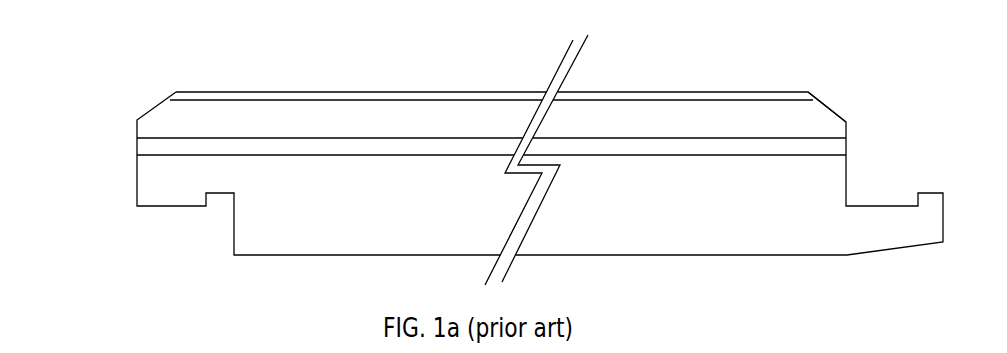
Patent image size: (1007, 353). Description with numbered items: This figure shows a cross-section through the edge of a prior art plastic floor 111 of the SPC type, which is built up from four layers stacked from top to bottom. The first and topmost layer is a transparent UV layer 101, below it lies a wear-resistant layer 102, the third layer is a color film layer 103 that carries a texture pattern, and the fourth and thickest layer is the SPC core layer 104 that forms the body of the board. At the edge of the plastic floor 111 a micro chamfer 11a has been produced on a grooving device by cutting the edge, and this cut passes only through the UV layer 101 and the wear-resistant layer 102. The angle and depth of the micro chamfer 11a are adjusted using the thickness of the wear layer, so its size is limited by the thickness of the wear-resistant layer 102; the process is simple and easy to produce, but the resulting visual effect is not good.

The plastic floor 111 is at (115, 112).
The transparent UV layer 101 is at (673, 98).
The wear-resistant layer 102 is at (412, 113).
The color film layer 103 is at (712, 145).
The SPC core layer 104 is at (467, 170).
The micro chamfer 11a is at (835, 110).